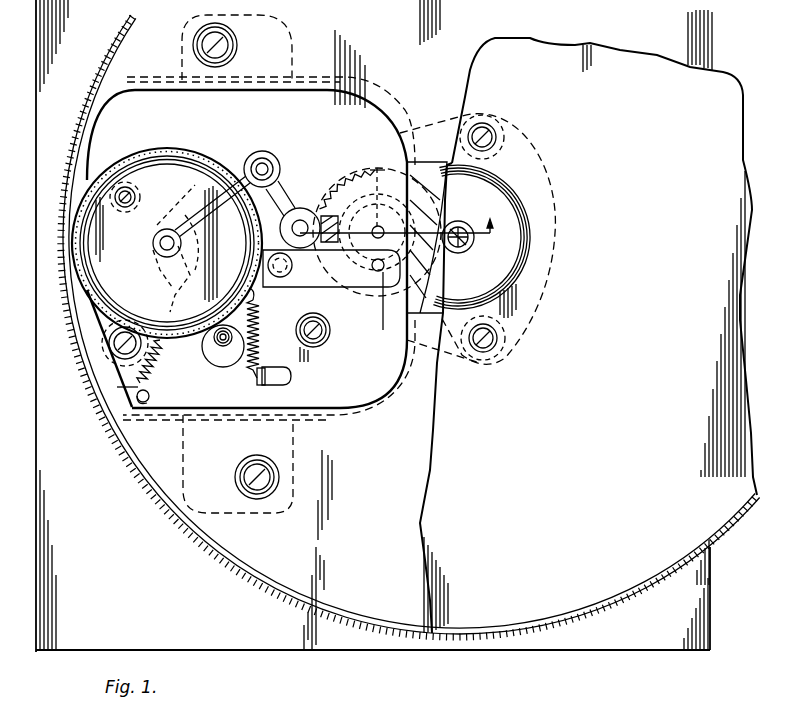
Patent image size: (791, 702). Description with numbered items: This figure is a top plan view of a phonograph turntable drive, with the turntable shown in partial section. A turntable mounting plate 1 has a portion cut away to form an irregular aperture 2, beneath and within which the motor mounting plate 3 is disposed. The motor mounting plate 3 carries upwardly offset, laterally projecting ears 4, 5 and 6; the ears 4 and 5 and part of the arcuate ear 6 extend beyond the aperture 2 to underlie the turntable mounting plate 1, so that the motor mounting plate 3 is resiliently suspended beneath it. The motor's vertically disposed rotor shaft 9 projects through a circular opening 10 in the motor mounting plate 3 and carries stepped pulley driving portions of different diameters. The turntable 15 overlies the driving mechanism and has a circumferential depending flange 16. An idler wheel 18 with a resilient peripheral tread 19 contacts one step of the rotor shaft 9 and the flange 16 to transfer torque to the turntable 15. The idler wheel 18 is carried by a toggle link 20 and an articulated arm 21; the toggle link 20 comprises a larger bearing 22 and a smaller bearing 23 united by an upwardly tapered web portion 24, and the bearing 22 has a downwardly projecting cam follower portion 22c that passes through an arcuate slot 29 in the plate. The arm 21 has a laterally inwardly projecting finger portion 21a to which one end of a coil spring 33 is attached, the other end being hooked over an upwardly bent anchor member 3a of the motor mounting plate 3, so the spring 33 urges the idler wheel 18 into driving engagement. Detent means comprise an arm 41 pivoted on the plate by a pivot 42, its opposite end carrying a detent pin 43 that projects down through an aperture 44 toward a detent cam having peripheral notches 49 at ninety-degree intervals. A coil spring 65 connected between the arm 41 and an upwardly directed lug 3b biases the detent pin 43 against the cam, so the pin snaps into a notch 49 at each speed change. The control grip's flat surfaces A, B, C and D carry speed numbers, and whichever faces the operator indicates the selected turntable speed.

The turntable mounting plate 1 is at (236, 642).
The aperture 2 is at (340, 412).
The motor mounting plate 3 is at (307, 100).
The anchor member 3a is at (143, 403).
The anchor lug 3b is at (270, 385).
The ear 4 is at (288, 46).
The ear 5 is at (268, 516).
The arcuate ear 6 is at (548, 290).
The rotor shaft 9 is at (256, 332).
The circular opening 10 is at (210, 352).
The turntable 15 is at (588, 316).
The circumferential depending flange 16 is at (243, 576).
The idler wheel 18 is at (143, 242).
The resilient peripheral tread 19 is at (191, 150).
The toggle link 20 is at (300, 209).
The articulated arm 21 is at (190, 196).
The finger portion 21a is at (152, 276).
The bearing 22 is at (255, 246).
The cam follower portion 22c is at (372, 231).
The bearing 23 is at (270, 153).
The web portion 24 is at (283, 185).
The arcuate slot 29 is at (329, 214).
The coil spring 33 is at (152, 352).
The detent arm 41 is at (311, 286).
The pivot pin 42 is at (278, 278).
The detent pin 43 is at (383, 300).
The aperture 44 is at (333, 330).
The peripheral notches 49 is at (375, 165).
The coil spring 65 is at (261, 343).
The flat surface A is at (458, 254).
The flat surface B is at (473, 243).
The flat surface C is at (464, 226).
The flat surface D is at (427, 237).